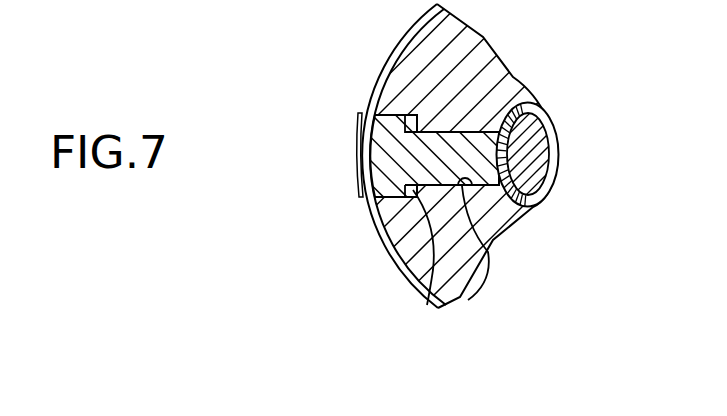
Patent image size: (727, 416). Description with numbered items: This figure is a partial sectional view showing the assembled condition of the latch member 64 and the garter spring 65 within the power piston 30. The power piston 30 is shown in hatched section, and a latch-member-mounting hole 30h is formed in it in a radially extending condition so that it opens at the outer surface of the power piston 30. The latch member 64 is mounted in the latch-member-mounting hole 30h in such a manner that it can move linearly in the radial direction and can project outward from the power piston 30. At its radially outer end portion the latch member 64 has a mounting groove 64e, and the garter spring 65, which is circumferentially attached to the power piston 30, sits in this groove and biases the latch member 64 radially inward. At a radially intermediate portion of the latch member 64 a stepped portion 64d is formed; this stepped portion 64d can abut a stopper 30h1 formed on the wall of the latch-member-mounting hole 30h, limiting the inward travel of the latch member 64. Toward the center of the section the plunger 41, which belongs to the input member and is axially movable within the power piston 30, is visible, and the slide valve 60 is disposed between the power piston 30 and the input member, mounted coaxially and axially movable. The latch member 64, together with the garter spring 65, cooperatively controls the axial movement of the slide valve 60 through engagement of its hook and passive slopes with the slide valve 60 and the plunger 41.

The power piston 30 is at (487, 72).
The latch-member-mounting hole 30h is at (492, 257).
The stopper 30h1 is at (427, 305).
The plunger 41 is at (547, 150).
The slide valve 60 is at (540, 197).
The latch member 64 is at (435, 156).
The stepped portion 64d is at (406, 196).
The mounting groove 64e is at (365, 168).
The garter spring 65 is at (357, 133).